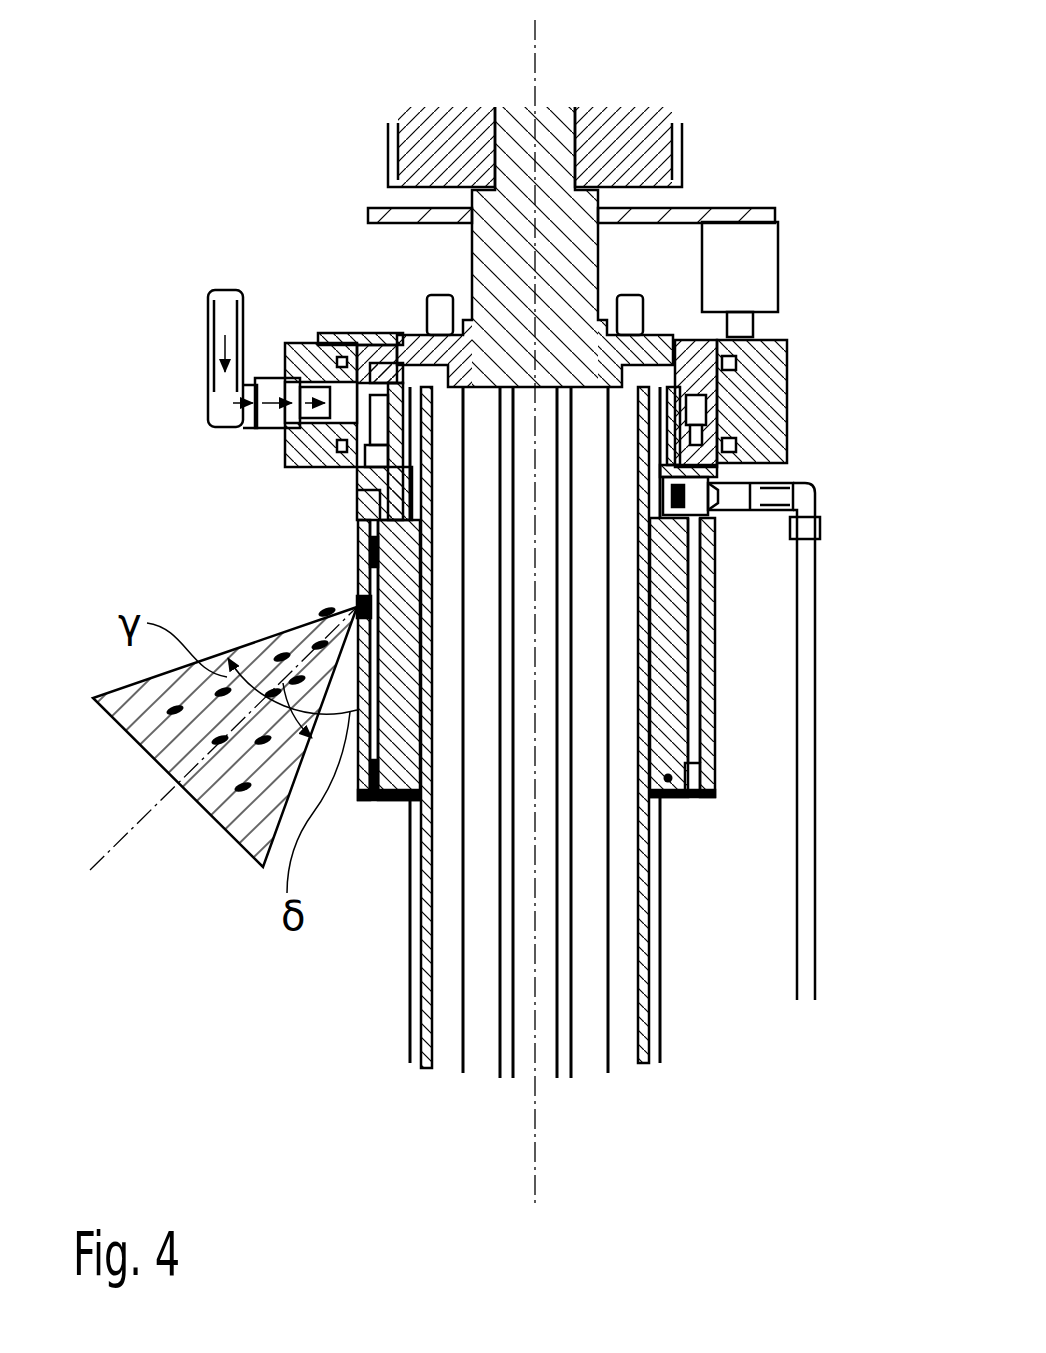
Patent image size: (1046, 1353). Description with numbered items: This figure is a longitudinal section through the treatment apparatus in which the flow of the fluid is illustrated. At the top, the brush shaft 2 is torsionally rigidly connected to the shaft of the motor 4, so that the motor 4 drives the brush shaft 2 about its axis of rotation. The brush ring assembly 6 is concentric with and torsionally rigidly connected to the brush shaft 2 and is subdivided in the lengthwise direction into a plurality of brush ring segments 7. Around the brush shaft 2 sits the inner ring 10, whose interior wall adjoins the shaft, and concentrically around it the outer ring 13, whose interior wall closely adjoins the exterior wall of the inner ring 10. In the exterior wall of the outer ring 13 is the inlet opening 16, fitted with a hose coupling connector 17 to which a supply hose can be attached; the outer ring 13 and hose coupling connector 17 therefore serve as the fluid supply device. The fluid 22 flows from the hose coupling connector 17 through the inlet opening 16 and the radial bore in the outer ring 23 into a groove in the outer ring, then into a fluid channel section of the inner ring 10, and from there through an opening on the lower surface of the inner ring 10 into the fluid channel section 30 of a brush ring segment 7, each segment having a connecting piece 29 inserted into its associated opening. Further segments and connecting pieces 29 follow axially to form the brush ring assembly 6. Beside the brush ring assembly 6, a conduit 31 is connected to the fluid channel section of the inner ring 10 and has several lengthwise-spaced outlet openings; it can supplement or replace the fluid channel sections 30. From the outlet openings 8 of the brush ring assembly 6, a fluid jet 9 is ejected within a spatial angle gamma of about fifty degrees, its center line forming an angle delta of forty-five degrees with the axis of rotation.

The brush shaft 2 is at (590, 998).
The motor 4 is at (645, 153).
The brush ring assembly 6 is at (688, 797).
The brush ring segments 7 is at (717, 637).
The outlet openings 8 is at (343, 605).
The fluid jet 9 is at (147, 752).
The inner ring 10 is at (693, 347).
The outer ring 13 is at (794, 363).
The inlet opening 16 is at (282, 430).
The hose coupling connector 17 is at (206, 380).
The fluid 22 is at (223, 272).
The radial bore in the outer ring 23 is at (277, 387).
The connecting piece of a brush ring segment 29 is at (708, 777).
The fluid channel section in the brush ring segment 30 is at (363, 787).
The conduit 31 is at (819, 693).